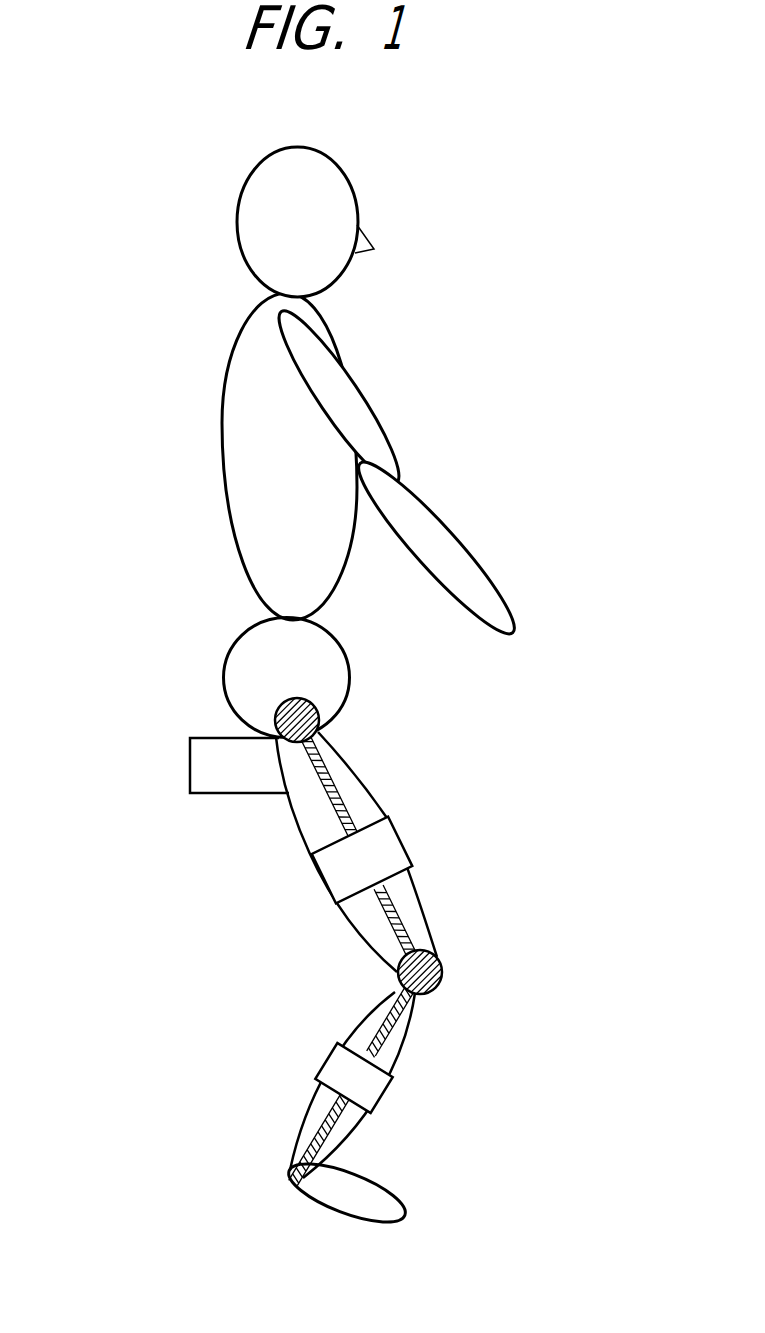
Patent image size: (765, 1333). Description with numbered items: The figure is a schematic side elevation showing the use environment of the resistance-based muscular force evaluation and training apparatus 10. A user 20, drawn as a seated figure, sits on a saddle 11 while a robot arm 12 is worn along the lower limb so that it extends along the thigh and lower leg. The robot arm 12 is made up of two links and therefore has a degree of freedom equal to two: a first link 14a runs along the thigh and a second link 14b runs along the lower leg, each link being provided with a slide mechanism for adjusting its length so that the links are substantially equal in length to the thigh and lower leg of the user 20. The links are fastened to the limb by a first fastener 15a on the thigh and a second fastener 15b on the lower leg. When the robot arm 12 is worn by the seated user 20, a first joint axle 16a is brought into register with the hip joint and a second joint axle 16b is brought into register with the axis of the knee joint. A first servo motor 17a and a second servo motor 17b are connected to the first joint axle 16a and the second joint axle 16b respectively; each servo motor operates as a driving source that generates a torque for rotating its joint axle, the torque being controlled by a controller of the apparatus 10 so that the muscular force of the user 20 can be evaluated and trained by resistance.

The resistance-based muscular force evaluation and training apparatus 10 is at (292, 1133).
The saddle 11 is at (190, 767).
The robot arm 12 is at (414, 897).
The first link 14a is at (343, 798).
The second link 14b is at (387, 1037).
The first fastener 15a is at (323, 880).
The second fastener 15b is at (333, 1056).
The first joint axle 16a is at (287, 712).
The second joint axle 16b is at (399, 973).
The first servo motor 17a is at (312, 709).
The second servo motor 17b is at (440, 962).
The user 20 is at (247, 450).